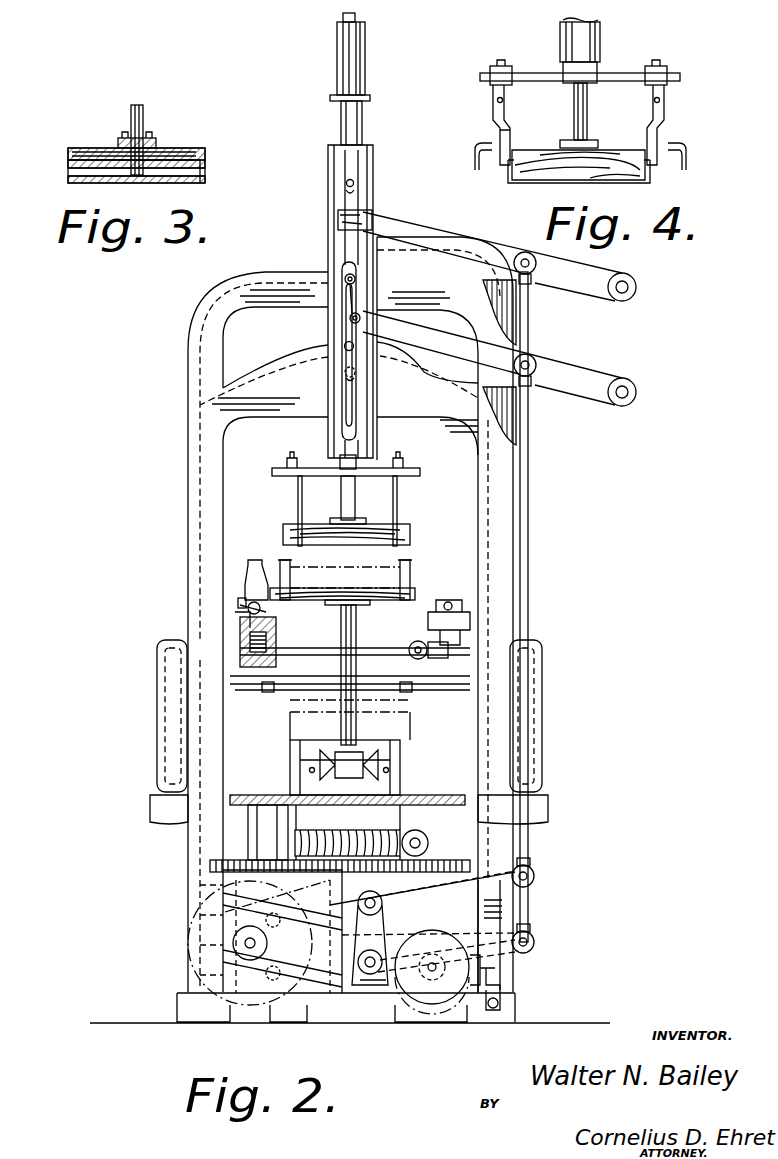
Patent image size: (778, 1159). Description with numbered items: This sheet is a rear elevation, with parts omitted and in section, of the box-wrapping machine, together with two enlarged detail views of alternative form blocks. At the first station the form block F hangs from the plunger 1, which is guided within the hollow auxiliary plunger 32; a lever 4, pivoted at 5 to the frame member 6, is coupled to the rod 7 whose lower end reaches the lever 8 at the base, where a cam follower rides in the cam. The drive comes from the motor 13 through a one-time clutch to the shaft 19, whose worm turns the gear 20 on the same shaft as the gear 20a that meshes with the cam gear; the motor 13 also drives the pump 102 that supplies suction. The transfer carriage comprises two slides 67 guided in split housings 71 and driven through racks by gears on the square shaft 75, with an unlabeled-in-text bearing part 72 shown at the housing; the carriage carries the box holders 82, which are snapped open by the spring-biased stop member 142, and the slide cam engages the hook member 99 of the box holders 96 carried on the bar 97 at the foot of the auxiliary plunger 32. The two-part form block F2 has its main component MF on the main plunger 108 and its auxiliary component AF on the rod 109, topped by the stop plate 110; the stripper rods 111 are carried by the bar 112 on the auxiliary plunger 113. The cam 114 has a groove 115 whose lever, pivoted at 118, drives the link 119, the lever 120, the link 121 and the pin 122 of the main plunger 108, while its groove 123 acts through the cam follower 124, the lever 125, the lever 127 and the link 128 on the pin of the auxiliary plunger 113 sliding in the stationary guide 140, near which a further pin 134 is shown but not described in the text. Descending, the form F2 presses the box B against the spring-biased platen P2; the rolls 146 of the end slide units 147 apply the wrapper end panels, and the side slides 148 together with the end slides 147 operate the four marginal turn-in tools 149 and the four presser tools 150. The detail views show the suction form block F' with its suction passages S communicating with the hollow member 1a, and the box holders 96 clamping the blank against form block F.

In FIG. 4, the plunger 1 is at (600, 30).
In FIG. 2, the plunger 1 is at (357, 17).
In FIG. 3, the hollow member 1a is at (144, 112).
In FIG. 2, the lever 4 is at (454, 240).
In FIG. 2, the pivot 5 is at (632, 285).
In FIG. 2, the frame member 6 is at (470, 330).
In FIG. 2, the rod 7 is at (530, 349).
In FIG. 2, the lever 8 is at (465, 935).
In FIG. 2, the motor 13 is at (190, 935).
In FIG. 2, the shaft 19 is at (428, 843).
In FIG. 2, the gear 20 is at (295, 843).
In FIG. 2, the gear 20a is at (452, 915).
In FIG. 4, the auxiliary plunger 32 is at (600, 68).
In FIG. 2, the auxiliary plunger 32 is at (366, 80).
In FIG. 2, the carriage slide 67 is at (278, 628).
In FIG. 2, the two-piece housing 71 is at (238, 644).
In FIG. 2, the bearing sleeve 72 is at (278, 634).
In FIG. 2, the shaft 75 is at (308, 648).
In FIG. 2, the box holder 82 is at (280, 566).
In FIG. 4, the box holder 96 is at (506, 135).
In FIG. 4, the bar 97 is at (605, 78).
In FIG. 4, the hook member 99 is at (476, 152).
In FIG. 2, the pump 102 is at (440, 1003).
In FIG. 2, the main plunger 108 is at (362, 135).
In FIG. 2, the rod or plunger 109 is at (354, 500).
In FIG. 2, the stop plate 110 is at (371, 98).
In FIG. 2, the stripper rods 111 is at (298, 496).
In FIG. 2, the bar 112 is at (385, 470).
In FIG. 2, the auxiliary plunger 113 is at (372, 220).
In FIG. 2, the cam 114 is at (200, 904).
In FIG. 2, the cam groove 115 is at (200, 950).
In FIG. 2, the pivot 118 is at (375, 885).
In FIG. 2, the link 119 is at (528, 568).
In FIG. 2, the lever 120 is at (423, 332).
In FIG. 2, the link 121 is at (348, 322).
In FIG. 2, the pin 122 is at (345, 275).
In FIG. 2, the cam groove 123 is at (200, 882).
In FIG. 2, the cam follower 124 is at (275, 905).
In FIG. 2, the lever 125 is at (395, 900).
In FIG. 2, the lever 127 is at (398, 390).
In FIG. 2, the link 128 is at (345, 370).
In FIG. 2, the pin 134 is at (343, 348).
In FIG. 2, the stationary guide 140 is at (340, 323).
In FIG. 2, the stop member 142 is at (240, 612).
In FIG. 2, the rolls 146 is at (400, 655).
In FIG. 2, the slide units 147 is at (158, 690).
In FIG. 2, the side slides 148 is at (390, 730).
In FIG. 2, the marginal turn-in tools 149 is at (300, 680).
In FIG. 2, the presser tools 150 is at (270, 692).
In FIG. 2, the auxiliary component AF is at (410, 528).
In FIG. 2, the main component MF is at (410, 540).
In FIG. 4, the form block F is at (578, 150).
In FIG. 3, the suction type form block F' is at (151, 155).
In FIG. 2, the form block F2 is at (272, 524).
In FIG. 4, the box B is at (650, 176).
In FIG. 2, the box B is at (305, 580).
In FIG. 2, the platen P2 is at (428, 722).
In FIG. 3, the suction passages S is at (95, 150).